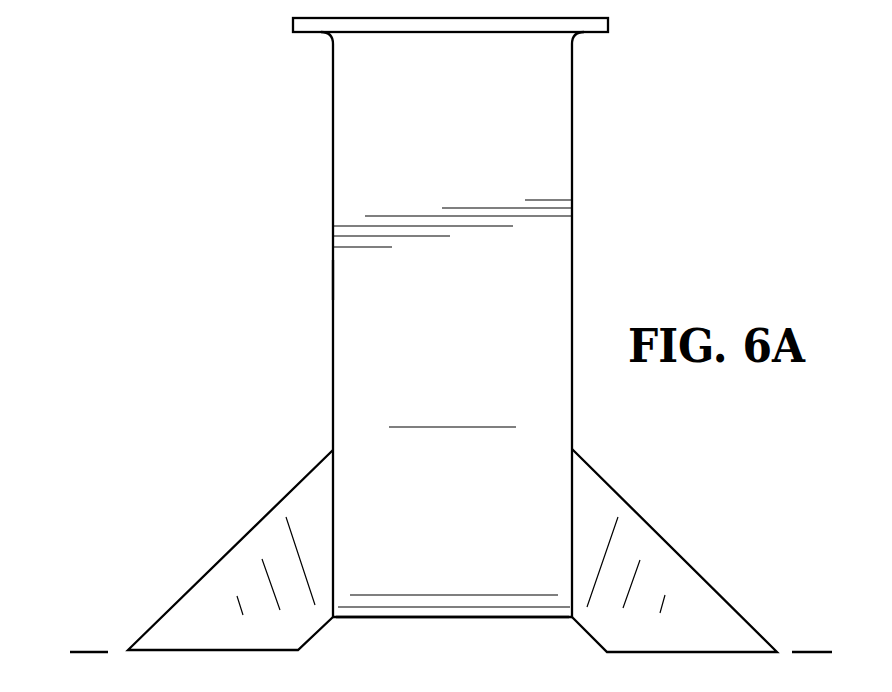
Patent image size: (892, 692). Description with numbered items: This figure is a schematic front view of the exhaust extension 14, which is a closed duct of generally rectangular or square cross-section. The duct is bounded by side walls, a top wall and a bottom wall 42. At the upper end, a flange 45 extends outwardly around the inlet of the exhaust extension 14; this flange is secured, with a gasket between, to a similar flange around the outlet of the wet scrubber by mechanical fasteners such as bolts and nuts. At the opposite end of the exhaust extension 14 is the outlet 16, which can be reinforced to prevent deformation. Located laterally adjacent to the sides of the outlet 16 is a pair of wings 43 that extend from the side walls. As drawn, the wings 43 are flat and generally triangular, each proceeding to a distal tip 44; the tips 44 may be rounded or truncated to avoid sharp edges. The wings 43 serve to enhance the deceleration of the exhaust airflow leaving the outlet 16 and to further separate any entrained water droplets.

The exhaust extension 14 is at (288, 283).
The outlet 16 is at (460, 623).
The bottom wall 42 is at (463, 347).
The wings 43 is at (253, 525).
The tip 44 is at (449, 651).
The flange 45 is at (592, 33).